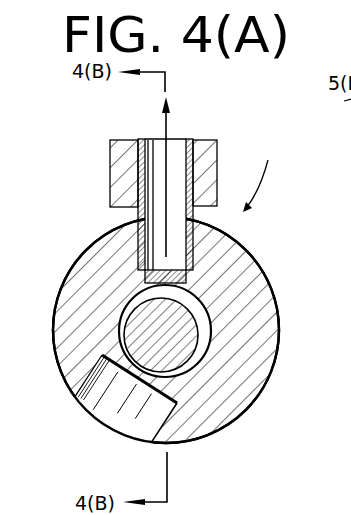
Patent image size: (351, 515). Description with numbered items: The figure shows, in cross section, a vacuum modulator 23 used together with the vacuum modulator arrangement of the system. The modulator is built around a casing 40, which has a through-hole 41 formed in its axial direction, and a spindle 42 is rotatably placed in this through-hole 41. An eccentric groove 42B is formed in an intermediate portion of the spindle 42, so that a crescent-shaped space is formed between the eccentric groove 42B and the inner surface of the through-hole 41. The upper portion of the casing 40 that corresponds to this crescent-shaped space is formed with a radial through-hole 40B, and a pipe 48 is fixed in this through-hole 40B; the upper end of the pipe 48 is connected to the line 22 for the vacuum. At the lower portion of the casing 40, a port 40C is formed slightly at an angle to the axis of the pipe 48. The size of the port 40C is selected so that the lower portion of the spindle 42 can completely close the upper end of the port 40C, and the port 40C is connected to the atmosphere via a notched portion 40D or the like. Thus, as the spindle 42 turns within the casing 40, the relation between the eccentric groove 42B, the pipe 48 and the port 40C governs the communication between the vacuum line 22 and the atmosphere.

The line for the vacuum 22 is at (168, 118).
The vacuum modulator 23 is at (268, 175).
The pipe 48 is at (152, 162).
The casing 40 is at (280, 333).
The radial through-hole 40B is at (142, 280).
The port 40C is at (108, 401).
The notched portion 40D is at (157, 429).
The through-hole 41 is at (205, 310).
The spindle 42 is at (149, 329).
The eccentric groove 42B is at (200, 347).